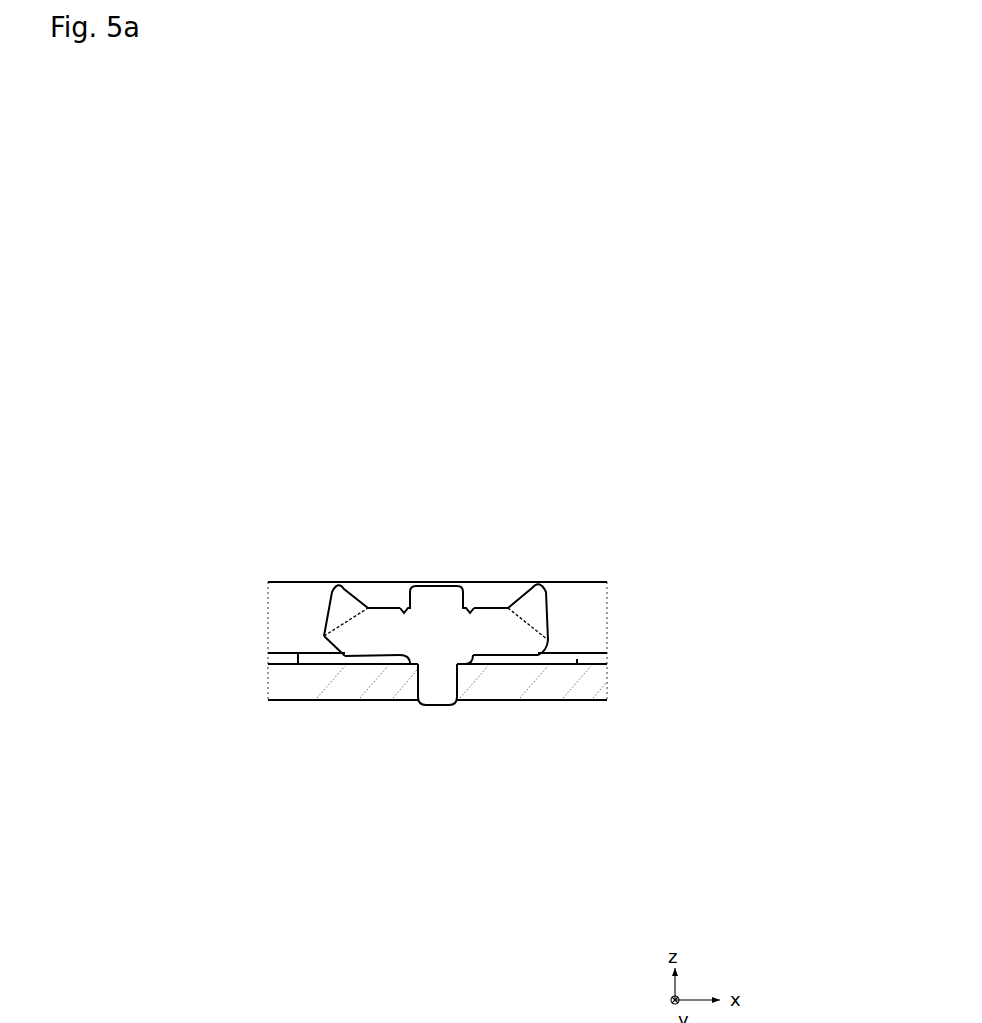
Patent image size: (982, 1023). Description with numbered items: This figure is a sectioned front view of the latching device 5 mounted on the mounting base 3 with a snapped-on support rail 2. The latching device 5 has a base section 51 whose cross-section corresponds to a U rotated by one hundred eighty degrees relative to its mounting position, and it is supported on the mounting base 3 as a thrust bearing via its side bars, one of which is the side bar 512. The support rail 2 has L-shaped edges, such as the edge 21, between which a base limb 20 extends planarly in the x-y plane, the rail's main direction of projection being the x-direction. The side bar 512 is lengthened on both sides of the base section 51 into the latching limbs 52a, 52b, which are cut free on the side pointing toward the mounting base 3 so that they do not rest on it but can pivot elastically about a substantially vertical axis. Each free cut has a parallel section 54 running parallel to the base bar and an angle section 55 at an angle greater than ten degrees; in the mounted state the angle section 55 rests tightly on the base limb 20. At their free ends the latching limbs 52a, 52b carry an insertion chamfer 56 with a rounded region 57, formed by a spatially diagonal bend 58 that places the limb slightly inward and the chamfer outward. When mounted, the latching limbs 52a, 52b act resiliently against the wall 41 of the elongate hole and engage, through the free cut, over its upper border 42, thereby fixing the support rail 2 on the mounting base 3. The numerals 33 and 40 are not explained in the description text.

The support rail 2 is at (439, 636).
The mounting base 3 is at (439, 733).
The latching device 5 is at (409, 655).
The base section 51 is at (409, 655).
The side bar 512 is at (409, 655).
The base limb 20 is at (592, 656).
The edge 21 is at (590, 620).
The projection 33 is at (435, 602).
The support surface 40 is at (550, 734).
The wall 41 is at (563, 655).
The upper border 42 is at (558, 650).
The latching limb 52a is at (387, 632).
The latching limb 52b is at (493, 633).
The parallel section 54 is at (390, 657).
The angle section 55 is at (345, 656).
The insertion chamfer 56 is at (409, 518).
The rounded region 57 is at (340, 582).
The bend 58 is at (351, 624).